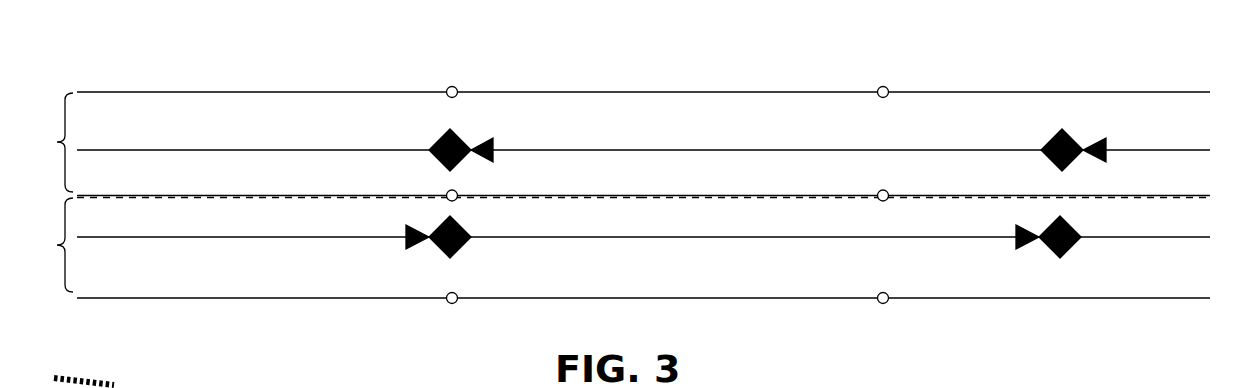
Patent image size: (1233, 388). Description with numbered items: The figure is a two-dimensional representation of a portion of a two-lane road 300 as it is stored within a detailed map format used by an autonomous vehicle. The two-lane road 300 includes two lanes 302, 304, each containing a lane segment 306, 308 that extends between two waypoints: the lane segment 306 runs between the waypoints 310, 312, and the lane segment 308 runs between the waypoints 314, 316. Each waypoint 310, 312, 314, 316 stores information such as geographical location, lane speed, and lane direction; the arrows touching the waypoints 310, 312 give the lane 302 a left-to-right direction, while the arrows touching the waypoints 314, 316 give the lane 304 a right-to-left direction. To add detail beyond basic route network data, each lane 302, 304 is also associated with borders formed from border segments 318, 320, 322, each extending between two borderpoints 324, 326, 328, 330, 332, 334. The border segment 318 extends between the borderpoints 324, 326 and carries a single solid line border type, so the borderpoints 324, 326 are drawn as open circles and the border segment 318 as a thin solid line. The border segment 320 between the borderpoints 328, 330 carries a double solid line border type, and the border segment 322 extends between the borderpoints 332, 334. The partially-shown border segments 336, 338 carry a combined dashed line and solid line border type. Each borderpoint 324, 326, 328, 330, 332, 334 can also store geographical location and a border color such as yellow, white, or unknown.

The two-lane road 300 is at (970, 52).
The lane 302 is at (47, 245).
The lane 304 is at (47, 142).
The lane segment 306 is at (615, 237).
The lane segment 308 is at (633, 150).
The waypoint 310 is at (461, 227).
The waypoint 312 is at (1069, 226).
The waypoint 314 is at (458, 141).
The waypoint 316 is at (1070, 141).
The border segment 318 is at (647, 298).
The border segment 320 is at (648, 195).
The border segment 322 is at (633, 92).
The borderpoint 324 is at (449, 304).
The borderpoint 326 is at (880, 304).
The borderpoint 328 is at (457, 190).
The borderpoint 330 is at (886, 190).
The borderpoint 332 is at (452, 86).
The borderpoint 334 is at (886, 86).
The partially-shown border segment 336 is at (148, 197).
The partially-shown border segment 338 is at (1132, 196).